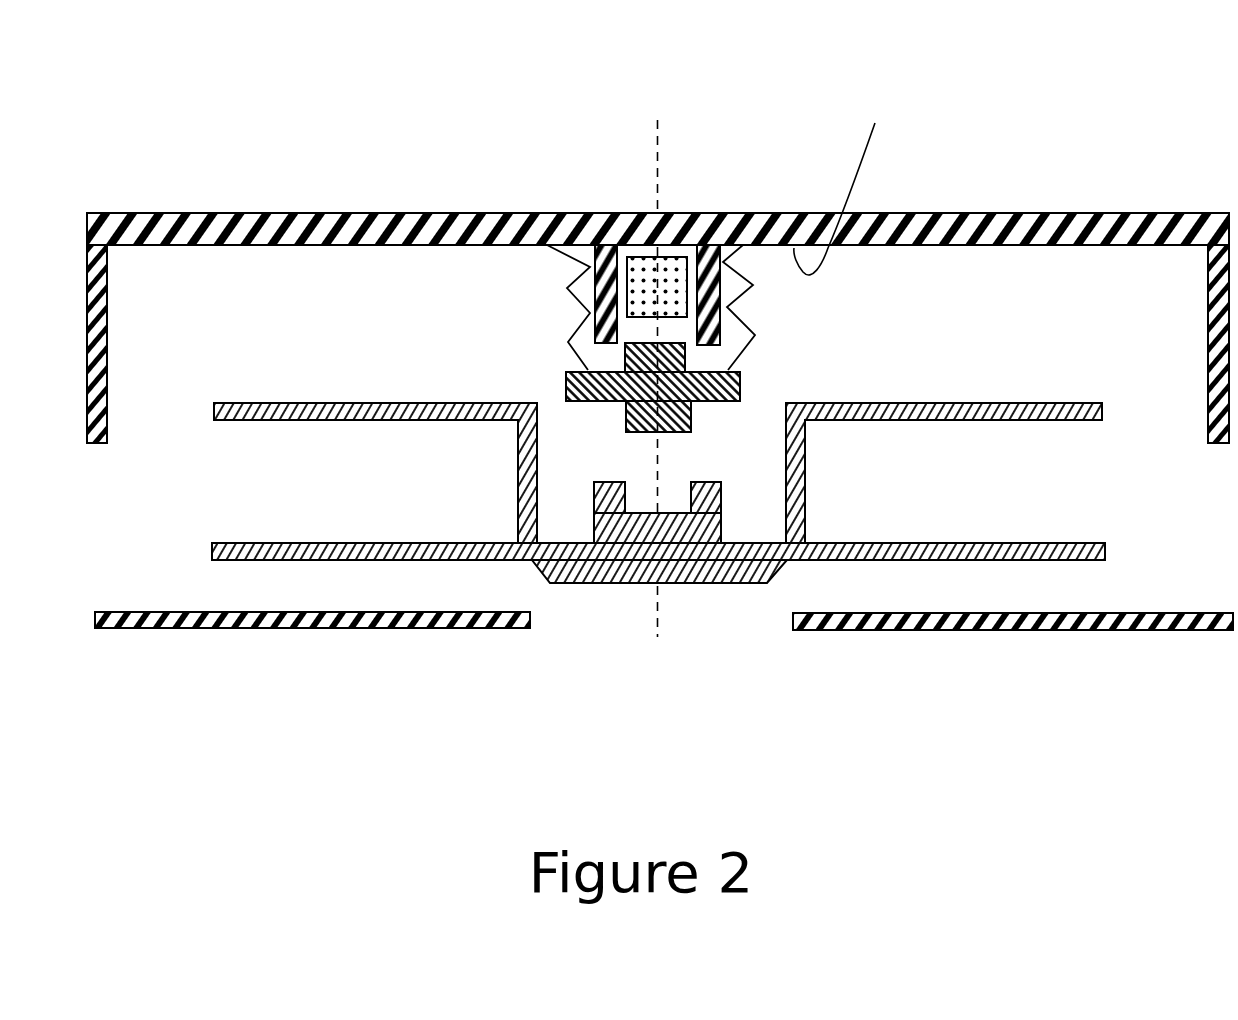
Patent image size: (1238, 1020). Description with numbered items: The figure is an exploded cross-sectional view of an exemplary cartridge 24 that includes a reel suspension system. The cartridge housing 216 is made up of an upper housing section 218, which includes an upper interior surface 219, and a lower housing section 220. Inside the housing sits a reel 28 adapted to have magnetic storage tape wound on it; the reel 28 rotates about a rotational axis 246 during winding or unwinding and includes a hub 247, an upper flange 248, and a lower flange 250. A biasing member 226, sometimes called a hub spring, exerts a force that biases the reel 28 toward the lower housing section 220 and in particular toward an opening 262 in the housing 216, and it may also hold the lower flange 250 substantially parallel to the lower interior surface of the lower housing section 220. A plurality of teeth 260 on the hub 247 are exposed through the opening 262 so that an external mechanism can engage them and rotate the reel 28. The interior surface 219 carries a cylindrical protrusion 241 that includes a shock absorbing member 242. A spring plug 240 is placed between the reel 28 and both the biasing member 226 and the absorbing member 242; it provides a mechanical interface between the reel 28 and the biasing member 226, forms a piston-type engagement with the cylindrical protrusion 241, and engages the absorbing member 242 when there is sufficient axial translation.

The cartridge 24 is at (658, 241).
The reel 28 is at (616, 421).
The cartridge housing 216 is at (1168, 243).
The upper housing section 218 is at (907, 235).
The upper interior surface 219 is at (840, 182).
The lower housing section 220 is at (235, 627).
The biasing member 226 is at (587, 303).
The spring plug 240 is at (740, 370).
The cylindrical protrusion 241 is at (603, 265).
The shock absorbing member 242 is at (660, 265).
The rotational axis 246 is at (653, 207).
The hub 247 is at (805, 493).
The upper flange 248 is at (268, 402).
The lower flange 250 is at (616, 500).
The teeth 260 is at (567, 585).
The opening 262 is at (726, 673).